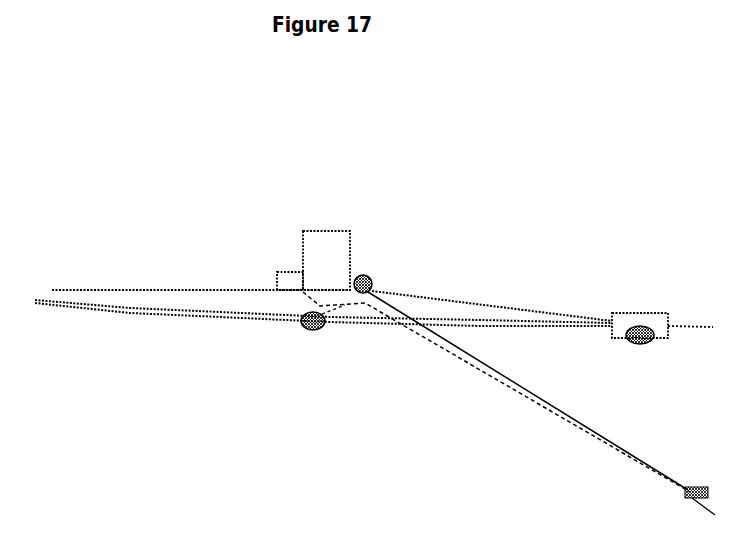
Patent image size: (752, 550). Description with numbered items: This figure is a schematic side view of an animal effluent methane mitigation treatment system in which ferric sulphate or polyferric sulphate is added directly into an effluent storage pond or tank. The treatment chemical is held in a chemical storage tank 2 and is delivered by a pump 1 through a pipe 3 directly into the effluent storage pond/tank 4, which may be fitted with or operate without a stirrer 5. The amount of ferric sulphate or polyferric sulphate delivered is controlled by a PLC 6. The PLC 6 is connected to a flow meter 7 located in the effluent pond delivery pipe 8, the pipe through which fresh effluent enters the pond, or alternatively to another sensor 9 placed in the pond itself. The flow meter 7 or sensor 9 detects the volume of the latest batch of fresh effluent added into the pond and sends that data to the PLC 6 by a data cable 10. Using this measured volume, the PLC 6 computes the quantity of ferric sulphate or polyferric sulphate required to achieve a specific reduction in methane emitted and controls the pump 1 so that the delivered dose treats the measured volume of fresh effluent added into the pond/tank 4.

The pump 1 is at (383, 264).
The chemical storage tank 2 is at (326, 219).
The pipe 3 is at (490, 291).
The effluent storage pond/tank 4 is at (703, 311).
The stirrer 5 is at (614, 357).
The PLC 6 is at (272, 260).
The flow meter 7 is at (311, 342).
The effluent pond delivery pipe 8 is at (188, 337).
The sensor 9 is at (672, 498).
The data cable 10 is at (369, 315).